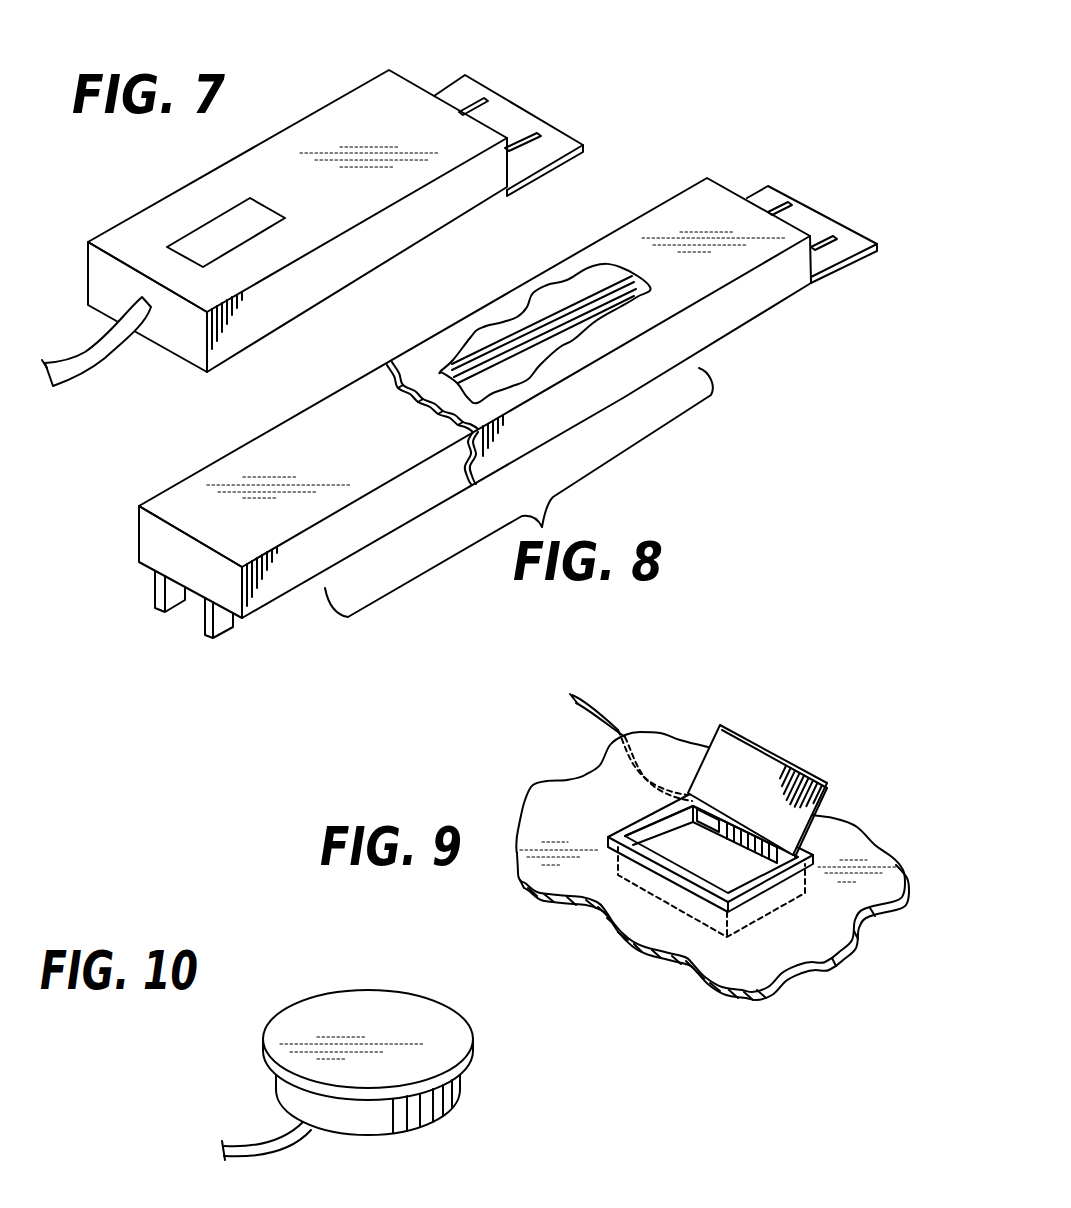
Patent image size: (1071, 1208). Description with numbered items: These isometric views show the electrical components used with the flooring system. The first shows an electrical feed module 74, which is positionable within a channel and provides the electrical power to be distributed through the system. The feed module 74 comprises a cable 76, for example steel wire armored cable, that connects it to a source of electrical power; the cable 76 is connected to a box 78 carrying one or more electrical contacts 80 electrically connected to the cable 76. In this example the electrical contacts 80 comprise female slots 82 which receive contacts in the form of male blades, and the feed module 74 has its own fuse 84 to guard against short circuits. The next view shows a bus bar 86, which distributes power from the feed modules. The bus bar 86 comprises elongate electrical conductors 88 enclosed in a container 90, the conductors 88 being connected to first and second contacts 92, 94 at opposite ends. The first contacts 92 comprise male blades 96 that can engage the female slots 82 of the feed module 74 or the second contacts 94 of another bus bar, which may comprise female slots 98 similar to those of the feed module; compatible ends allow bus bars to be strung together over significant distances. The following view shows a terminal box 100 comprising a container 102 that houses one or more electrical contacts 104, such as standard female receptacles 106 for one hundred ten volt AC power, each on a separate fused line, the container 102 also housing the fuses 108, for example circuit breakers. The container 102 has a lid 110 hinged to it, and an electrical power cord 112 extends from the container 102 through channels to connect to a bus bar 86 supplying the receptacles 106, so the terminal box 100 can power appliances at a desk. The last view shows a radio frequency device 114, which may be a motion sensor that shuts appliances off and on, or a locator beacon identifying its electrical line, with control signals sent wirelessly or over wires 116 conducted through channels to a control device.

In FIG. 7, the electrical feed module 74 is at (358, 90).
In FIG. 7, the cable 76 is at (88, 348).
In FIG. 7, the box 78 is at (433, 217).
In FIG. 7, the electrical contacts 80 is at (530, 138).
In FIG. 7, the female slots 82 is at (476, 100).
In FIG. 7, the fuse 84 is at (262, 209).
In FIG. 8, the bus bar 86 is at (300, 423).
In FIG. 8, the elongate electrical conductors 88 is at (457, 365).
In FIG. 8, the container 90 is at (731, 317).
In FIG. 8, the first contacts 92 is at (155, 592).
In FIG. 8, the second contacts 94 is at (775, 200).
In FIG. 8, the male blades 96 is at (205, 617).
In FIG. 8, the female slots 98 is at (827, 237).
In FIG. 9, the terminal box 100 is at (727, 706).
In FIG. 9, the container 102 is at (708, 928).
In FIG. 9, the electrical contacts 104 is at (772, 838).
In FIG. 9, the female receptacles 106 is at (748, 841).
In FIG. 9, the fuses 108 is at (697, 834).
In FIG. 9, the lid 110 is at (745, 760).
In FIG. 9, the electrical power cord 112 is at (597, 697).
In FIG. 10, the radio frequency device 114 is at (443, 1053).
In FIG. 10, the wires 116 is at (228, 1146).